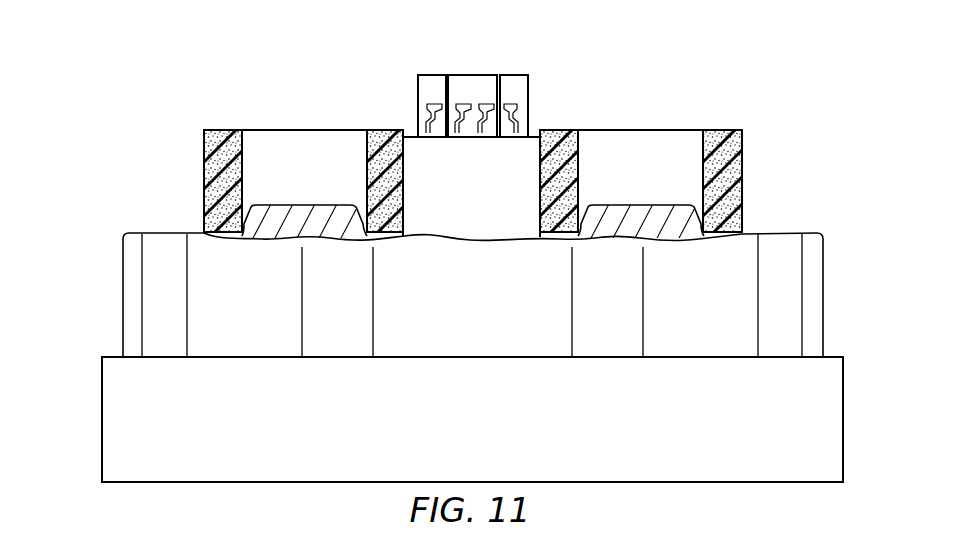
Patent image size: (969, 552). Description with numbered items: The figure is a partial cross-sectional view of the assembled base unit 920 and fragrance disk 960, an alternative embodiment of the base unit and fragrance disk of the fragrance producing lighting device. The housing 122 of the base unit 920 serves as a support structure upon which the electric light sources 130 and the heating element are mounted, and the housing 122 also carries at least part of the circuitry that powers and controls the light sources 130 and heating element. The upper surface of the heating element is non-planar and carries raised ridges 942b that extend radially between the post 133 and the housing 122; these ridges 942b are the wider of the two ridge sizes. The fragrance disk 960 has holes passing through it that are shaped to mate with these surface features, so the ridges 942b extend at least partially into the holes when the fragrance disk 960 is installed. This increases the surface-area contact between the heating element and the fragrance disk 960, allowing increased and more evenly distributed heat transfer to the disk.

The base unit 920 is at (768, 70).
The housing 122 is at (122, 298).
The fragrance disk 960 is at (201, 160).
The ridges 942b is at (308, 205).
The post 133 is at (490, 200).
The electric light sources 130 is at (472, 75).